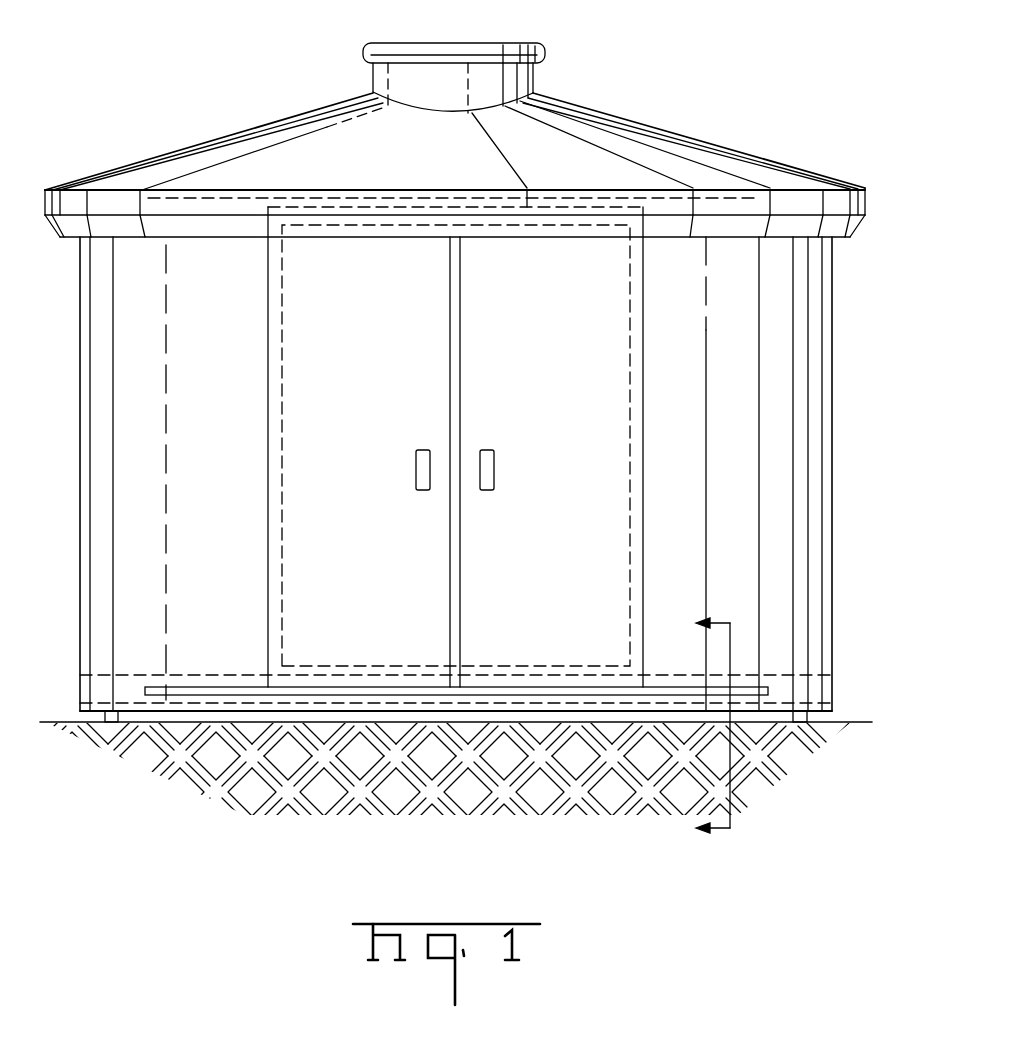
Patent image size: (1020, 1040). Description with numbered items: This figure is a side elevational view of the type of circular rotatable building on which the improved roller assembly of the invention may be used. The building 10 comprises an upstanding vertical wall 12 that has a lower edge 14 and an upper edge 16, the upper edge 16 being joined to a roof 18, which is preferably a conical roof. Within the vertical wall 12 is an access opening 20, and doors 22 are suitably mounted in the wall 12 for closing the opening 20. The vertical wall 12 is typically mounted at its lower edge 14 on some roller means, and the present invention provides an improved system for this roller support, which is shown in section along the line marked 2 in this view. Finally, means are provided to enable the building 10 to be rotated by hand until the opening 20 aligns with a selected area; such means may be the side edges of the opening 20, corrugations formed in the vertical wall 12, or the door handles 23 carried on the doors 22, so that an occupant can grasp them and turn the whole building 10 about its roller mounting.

The building 10 is at (486, 424).
The vertical wall 12 is at (820, 572).
The lower edge 14 is at (826, 715).
The upper edge 16 is at (803, 237).
The roof 18 is at (683, 135).
The access opening 20 is at (381, 538).
The doors 22 is at (270, 427).
The door handles 23 is at (422, 448).
The section line 2- 2 is at (702, 722).